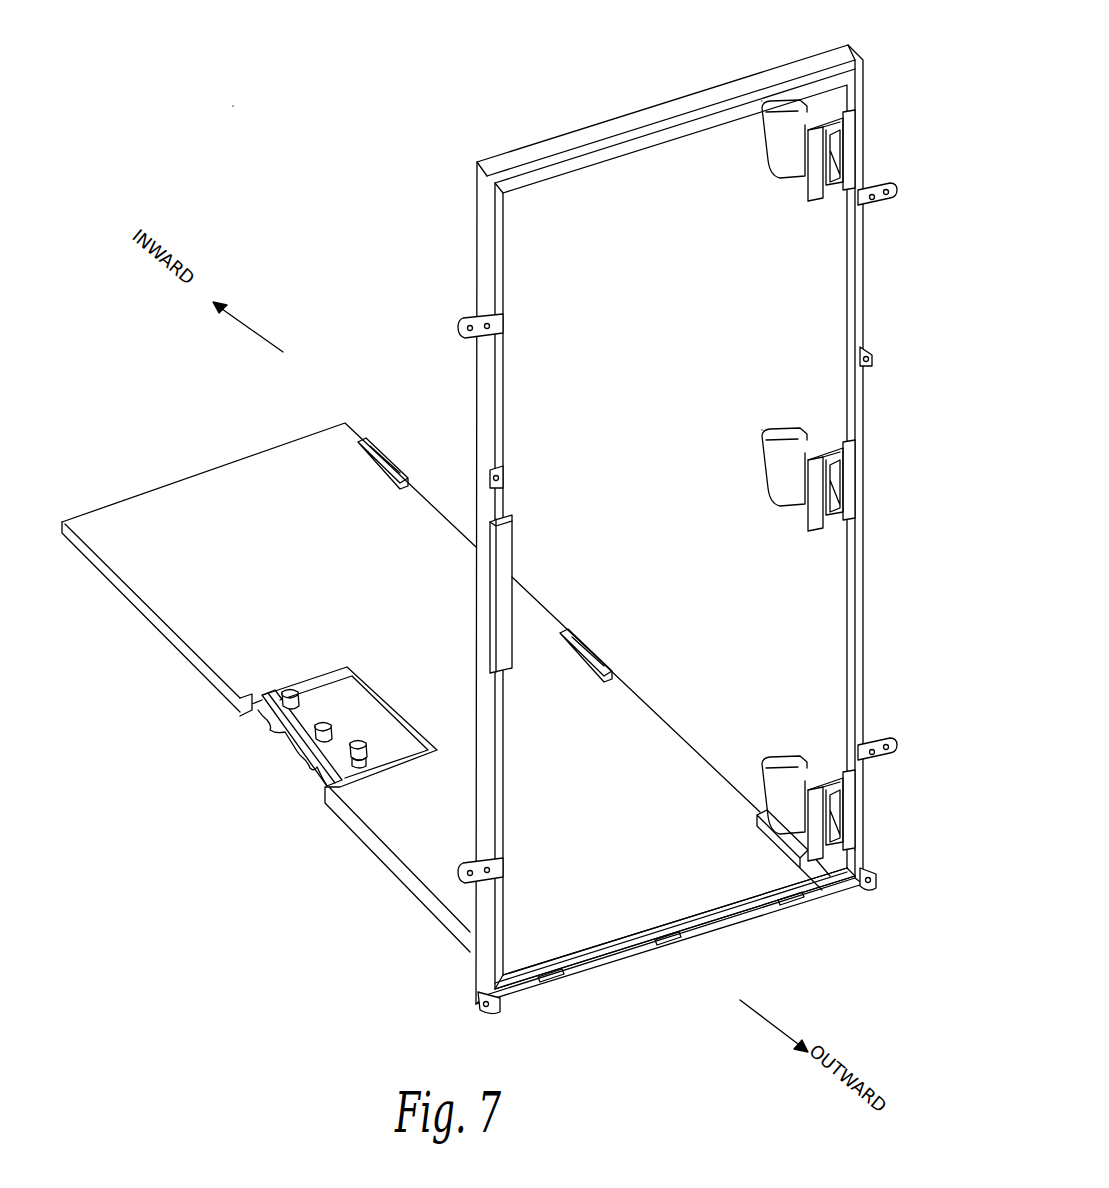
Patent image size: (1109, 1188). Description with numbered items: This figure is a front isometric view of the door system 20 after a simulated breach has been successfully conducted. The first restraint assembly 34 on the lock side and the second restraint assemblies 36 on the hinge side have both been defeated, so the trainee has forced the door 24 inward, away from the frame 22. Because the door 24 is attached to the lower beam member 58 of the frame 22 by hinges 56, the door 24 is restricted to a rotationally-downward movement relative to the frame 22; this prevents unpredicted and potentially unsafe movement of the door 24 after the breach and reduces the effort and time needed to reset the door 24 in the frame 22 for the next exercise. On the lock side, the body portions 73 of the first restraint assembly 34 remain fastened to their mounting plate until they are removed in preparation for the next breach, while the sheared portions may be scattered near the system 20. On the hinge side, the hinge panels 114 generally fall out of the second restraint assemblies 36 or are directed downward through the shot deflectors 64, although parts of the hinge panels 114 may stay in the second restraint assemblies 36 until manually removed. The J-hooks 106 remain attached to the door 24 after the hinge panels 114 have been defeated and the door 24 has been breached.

The system 20 is at (235, 109).
The frame 22 is at (585, 130).
The door 24 is at (236, 470).
The first restraint assembly 34 is at (223, 768).
The second restraint assemblies 36 is at (877, 132).
The hinges 56 is at (546, 968).
The lower beam member 58 is at (622, 958).
The shot deflectors 64 is at (780, 152).
The body portions 73 is at (250, 700).
The J-hooks 106 is at (400, 458).
The hinge panels 114 is at (848, 150).